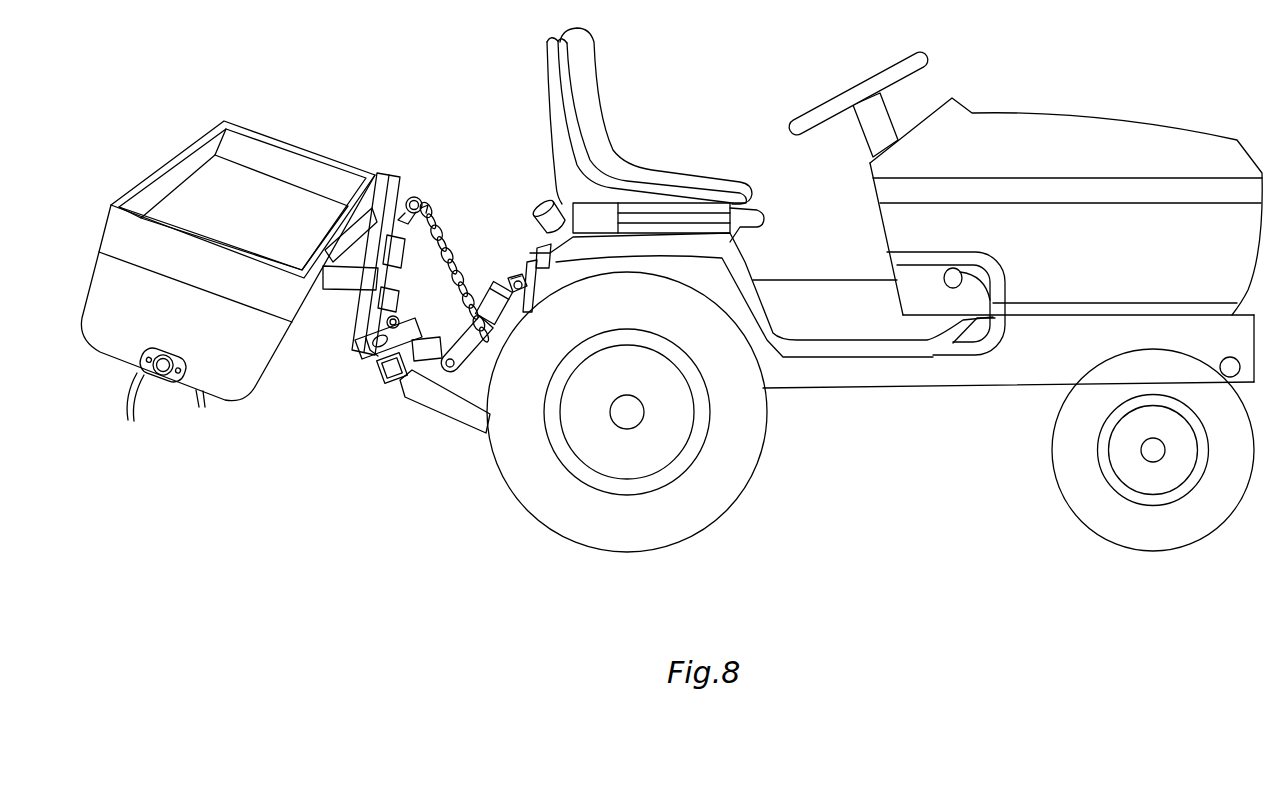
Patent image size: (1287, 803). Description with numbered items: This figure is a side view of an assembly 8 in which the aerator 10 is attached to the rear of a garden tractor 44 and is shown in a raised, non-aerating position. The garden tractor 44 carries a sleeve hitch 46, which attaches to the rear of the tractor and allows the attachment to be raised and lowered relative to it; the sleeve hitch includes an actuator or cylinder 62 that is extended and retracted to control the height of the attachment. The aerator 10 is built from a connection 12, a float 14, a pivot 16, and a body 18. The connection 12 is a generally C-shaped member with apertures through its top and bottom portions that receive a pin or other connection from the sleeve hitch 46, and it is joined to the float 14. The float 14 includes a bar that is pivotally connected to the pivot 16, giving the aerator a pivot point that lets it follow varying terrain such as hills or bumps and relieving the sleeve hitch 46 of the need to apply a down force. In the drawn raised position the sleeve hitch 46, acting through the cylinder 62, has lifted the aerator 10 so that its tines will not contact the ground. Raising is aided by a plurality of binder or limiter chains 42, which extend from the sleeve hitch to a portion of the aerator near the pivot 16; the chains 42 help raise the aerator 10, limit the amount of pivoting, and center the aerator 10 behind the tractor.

The assembly 8 is at (468, 215).
The aerator 10 is at (186, 108).
The connection 12 is at (420, 345).
The float 14 is at (380, 358).
The pivot 16 is at (373, 322).
The body 18 is at (110, 285).
The binder or limiter chains 42 is at (460, 258).
The garden tractor 44 is at (1058, 82).
The sleeve hitch 46 is at (552, 282).
The actuator cylinder 62 is at (503, 312).